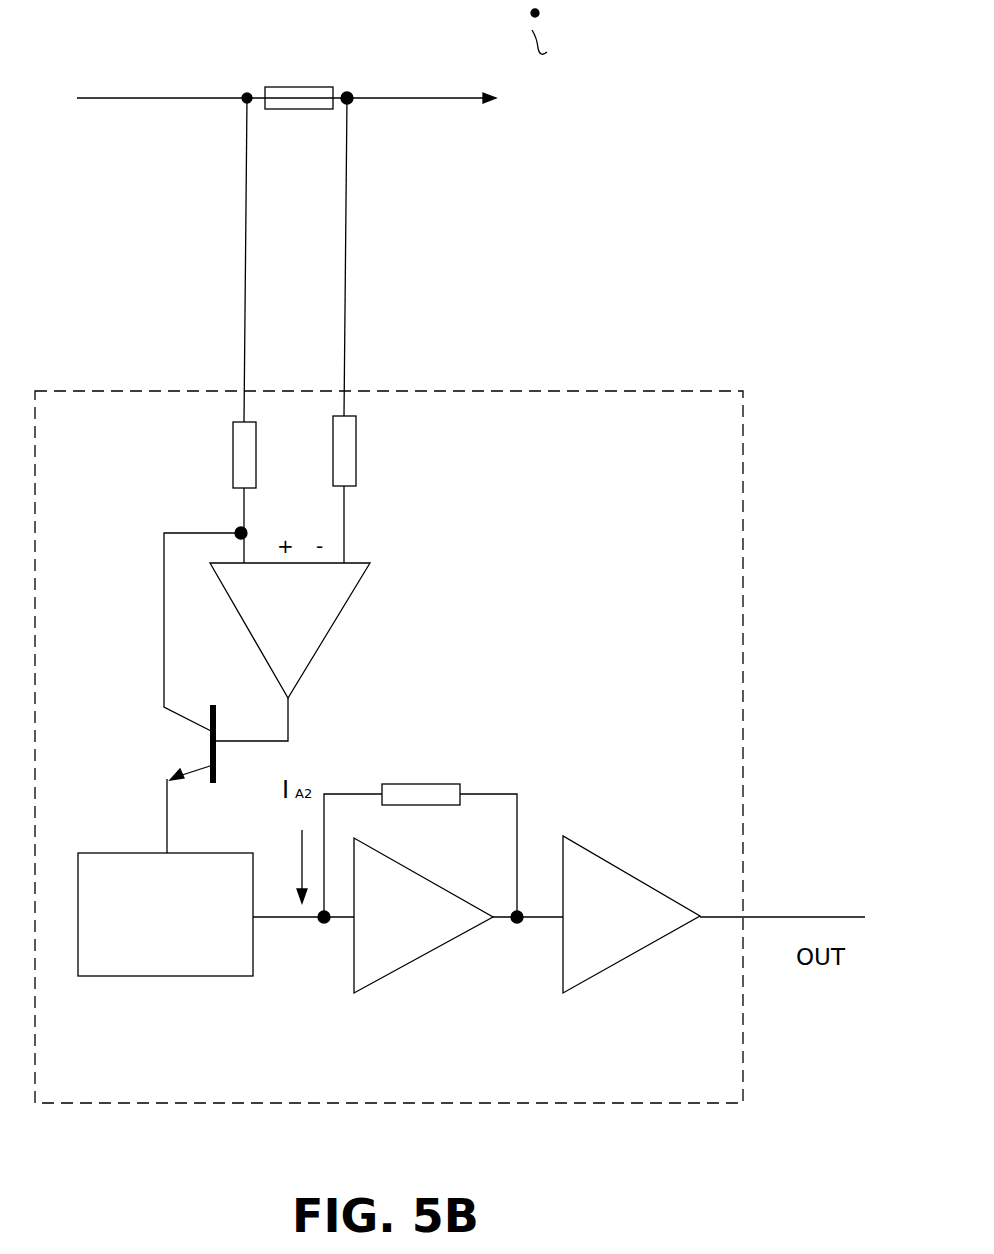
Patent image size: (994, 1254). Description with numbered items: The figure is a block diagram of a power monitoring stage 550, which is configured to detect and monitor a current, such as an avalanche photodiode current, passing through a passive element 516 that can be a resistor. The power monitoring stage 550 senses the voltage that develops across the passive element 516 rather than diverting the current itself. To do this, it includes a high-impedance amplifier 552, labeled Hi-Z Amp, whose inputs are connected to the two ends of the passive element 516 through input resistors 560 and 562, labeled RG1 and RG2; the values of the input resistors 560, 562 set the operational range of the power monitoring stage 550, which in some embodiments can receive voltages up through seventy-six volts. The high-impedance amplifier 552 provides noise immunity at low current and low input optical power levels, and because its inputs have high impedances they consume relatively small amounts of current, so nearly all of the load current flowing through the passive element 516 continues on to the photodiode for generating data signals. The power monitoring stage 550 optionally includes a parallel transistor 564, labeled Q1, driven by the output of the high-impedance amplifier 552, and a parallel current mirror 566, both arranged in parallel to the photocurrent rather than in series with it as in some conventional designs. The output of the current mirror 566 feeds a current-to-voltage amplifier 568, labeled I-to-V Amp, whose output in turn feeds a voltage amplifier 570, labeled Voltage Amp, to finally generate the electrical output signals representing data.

The passive element 516 is at (297, 87).
The power monitoring stage 550 is at (743, 626).
The high-impedance amplifier 552 is at (335, 619).
The input resistor RG1 560 is at (233, 477).
The input resistor RG2 562 is at (356, 485).
The parallel transistor 564 is at (131, 720).
The parallel current mirror 566 is at (122, 976).
The current-to-voltage amplifier 568 is at (425, 873).
The voltage amplifier 570 is at (618, 865).